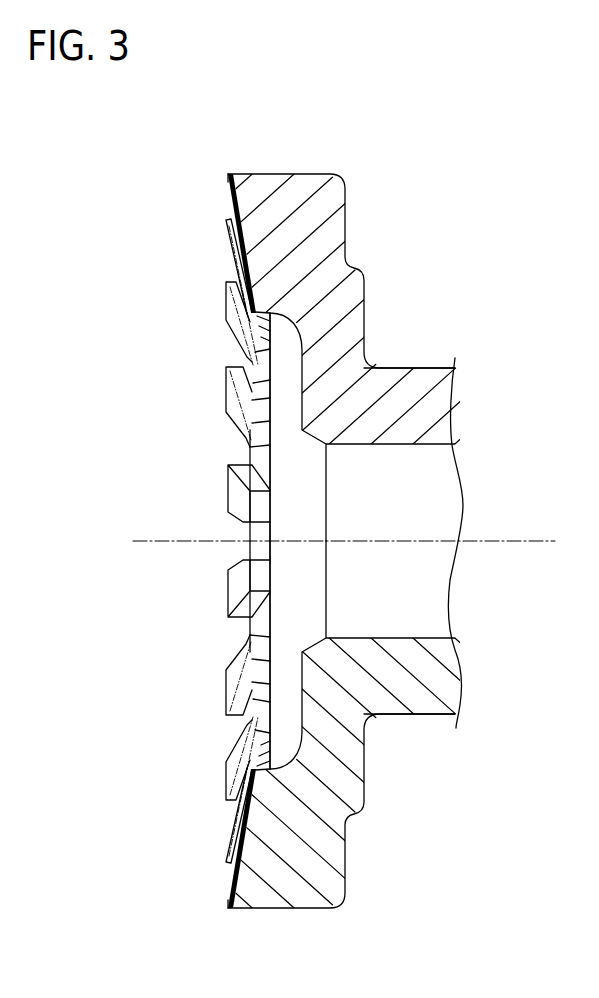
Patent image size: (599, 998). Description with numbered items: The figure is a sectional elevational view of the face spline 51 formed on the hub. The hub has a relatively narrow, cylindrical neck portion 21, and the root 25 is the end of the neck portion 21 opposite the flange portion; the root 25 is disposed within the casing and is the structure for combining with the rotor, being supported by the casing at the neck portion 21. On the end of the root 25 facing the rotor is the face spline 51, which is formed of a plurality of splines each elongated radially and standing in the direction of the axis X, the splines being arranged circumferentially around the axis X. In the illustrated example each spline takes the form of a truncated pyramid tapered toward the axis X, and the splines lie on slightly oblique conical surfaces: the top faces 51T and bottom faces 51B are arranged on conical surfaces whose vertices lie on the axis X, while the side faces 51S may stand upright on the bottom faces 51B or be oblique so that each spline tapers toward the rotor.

The root 25 is at (305, 173).
The neck portion 21 is at (422, 368).
The face spline 51 is at (200, 752).
The bottom faces 51B is at (250, 546).
The side faces 51S is at (241, 463).
The top faces 51T is at (230, 491).
The axis X is at (530, 525).